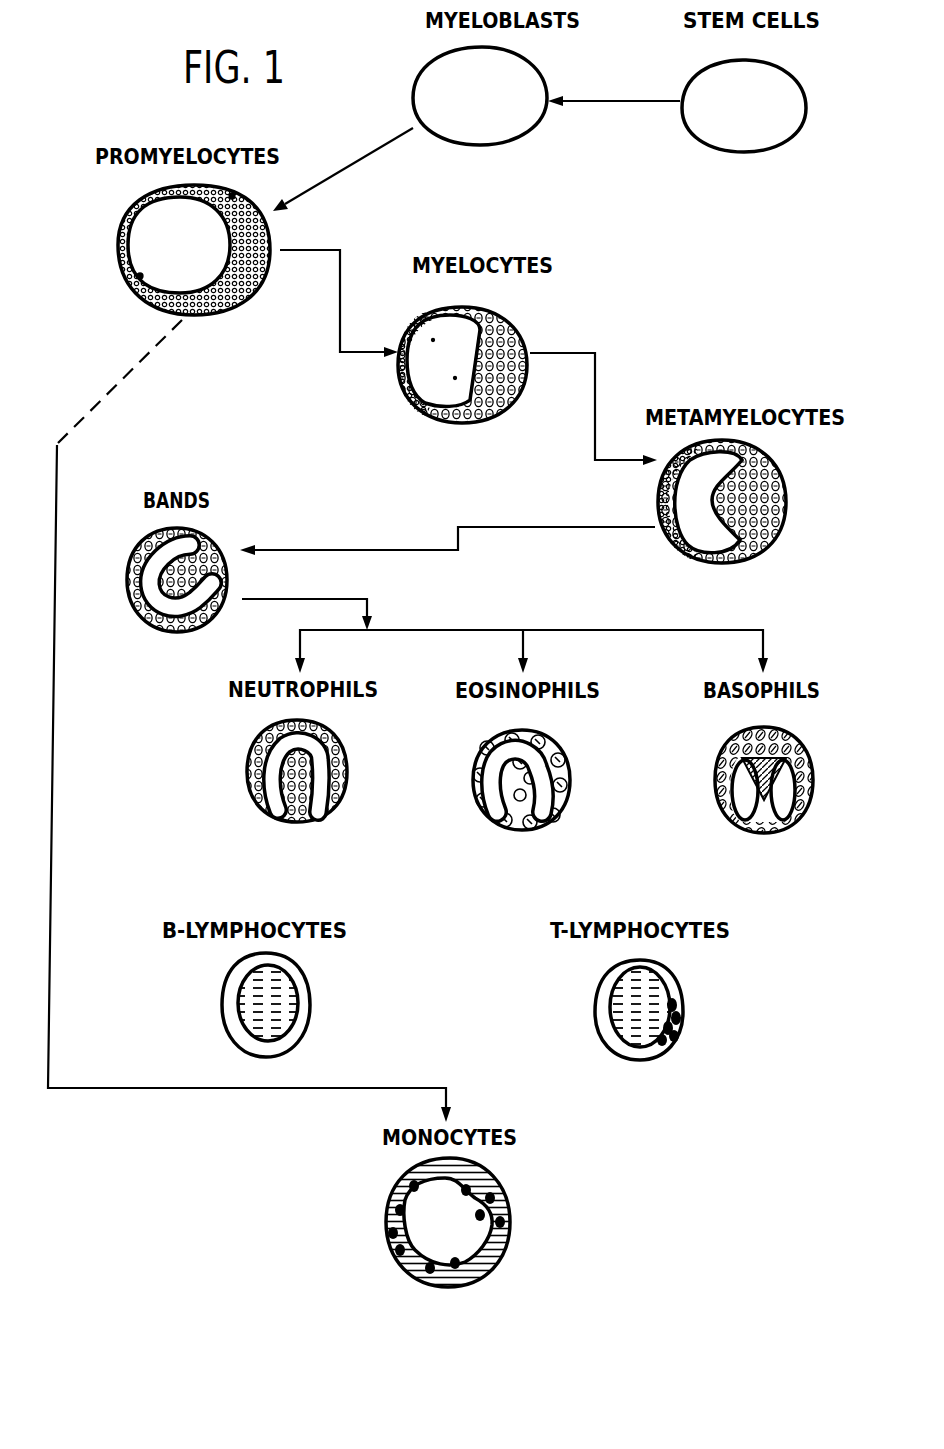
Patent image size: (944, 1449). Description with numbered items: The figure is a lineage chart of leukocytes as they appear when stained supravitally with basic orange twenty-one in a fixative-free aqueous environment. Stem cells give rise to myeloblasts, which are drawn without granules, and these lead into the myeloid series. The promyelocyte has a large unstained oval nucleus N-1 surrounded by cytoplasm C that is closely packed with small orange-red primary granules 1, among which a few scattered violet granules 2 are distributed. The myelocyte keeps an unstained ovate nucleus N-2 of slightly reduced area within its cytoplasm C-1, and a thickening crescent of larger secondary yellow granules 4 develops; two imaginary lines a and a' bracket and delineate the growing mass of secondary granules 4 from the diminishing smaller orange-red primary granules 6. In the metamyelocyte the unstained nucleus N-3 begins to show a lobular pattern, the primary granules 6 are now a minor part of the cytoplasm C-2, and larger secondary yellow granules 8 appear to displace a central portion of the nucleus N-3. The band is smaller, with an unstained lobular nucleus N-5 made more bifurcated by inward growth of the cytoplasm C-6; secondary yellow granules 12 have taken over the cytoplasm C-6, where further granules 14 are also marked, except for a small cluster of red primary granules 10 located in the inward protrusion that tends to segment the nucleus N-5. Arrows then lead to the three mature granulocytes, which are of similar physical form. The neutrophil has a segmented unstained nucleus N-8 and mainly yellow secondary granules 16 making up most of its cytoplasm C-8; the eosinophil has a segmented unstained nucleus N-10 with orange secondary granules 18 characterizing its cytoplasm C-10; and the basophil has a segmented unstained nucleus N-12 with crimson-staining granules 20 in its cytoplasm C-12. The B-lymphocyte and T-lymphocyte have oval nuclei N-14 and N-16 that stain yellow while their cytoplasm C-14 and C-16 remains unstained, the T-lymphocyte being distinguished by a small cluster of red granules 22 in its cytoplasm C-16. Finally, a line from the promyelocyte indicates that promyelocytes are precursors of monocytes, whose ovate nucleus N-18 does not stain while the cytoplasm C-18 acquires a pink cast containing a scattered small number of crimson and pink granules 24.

The primary granules 1 is at (150, 194).
The violet granules 2 is at (230, 193).
The nucleus N-1 is at (150, 237).
The cytoplasm C is at (270, 232).
The primary granules 6 is at (415, 317).
The secondary granules 4 is at (517, 338).
The imaginary line a is at (451, 364).
The imaginary line a' is at (490, 369).
The nucleus N-2 is at (422, 373).
The cytoplasm of myelocyte C-1 is at (413, 405).
The secondary granules 8 is at (770, 457).
The nucleus N-3 is at (697, 527).
The cytoplasm C-2 is at (740, 560).
The granules of band cell 14 is at (155, 538).
The secondary granules 12 is at (140, 567).
The nucleus N-5 is at (147, 587).
The cytoplasm C-6 is at (150, 595).
The primary granules 10 is at (190, 547).
The cytoplasm C-8 is at (303, 720).
The secondary granules 16 is at (248, 773).
The nucleus N-8 is at (265, 792).
The cytoplasm C-10 is at (533, 732).
The secondary granules 18 is at (480, 770).
The nucleus N-10 is at (498, 797).
The cytoplasm of basophil C-12 is at (760, 769).
The secondary granules 20 is at (727, 748).
The nucleus N-12 is at (738, 780).
The nucleus N-14 is at (282, 990).
The cytoplasm C-14 is at (298, 1022).
The cytoplasm C-16 is at (608, 982).
The nucleus N-16 is at (657, 988).
The red granules 22 is at (677, 1033).
The cytoplasm C-18 is at (443, 1162).
The nucleus N-18 is at (423, 1203).
The granules 24 is at (387, 1232).